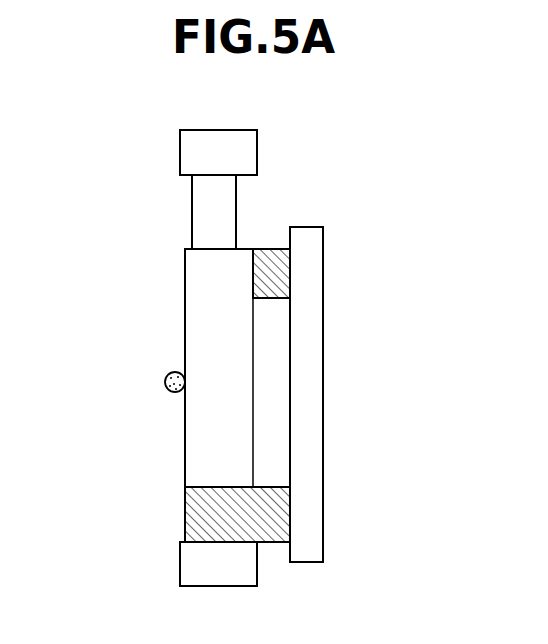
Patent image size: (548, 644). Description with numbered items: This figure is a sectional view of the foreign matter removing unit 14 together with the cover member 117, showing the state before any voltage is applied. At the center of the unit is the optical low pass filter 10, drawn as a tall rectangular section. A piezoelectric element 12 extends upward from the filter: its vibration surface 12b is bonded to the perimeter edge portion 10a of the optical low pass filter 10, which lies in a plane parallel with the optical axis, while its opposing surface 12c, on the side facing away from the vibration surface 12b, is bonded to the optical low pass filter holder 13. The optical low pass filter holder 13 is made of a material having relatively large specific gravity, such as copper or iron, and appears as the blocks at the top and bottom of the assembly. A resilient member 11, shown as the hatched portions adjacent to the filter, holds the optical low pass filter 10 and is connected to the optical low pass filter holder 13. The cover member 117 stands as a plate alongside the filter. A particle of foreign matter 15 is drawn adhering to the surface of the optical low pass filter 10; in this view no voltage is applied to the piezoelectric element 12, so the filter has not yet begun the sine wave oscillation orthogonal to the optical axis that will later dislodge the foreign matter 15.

The foreign matter removing unit 14 is at (142, 150).
The optical low pass filter holder 13 is at (257, 142).
The piezoelectric element 12 is at (197, 195).
The opposing surface 12c is at (217, 175).
The vibration surface 12b is at (217, 249).
The optical low pass filter 10 is at (202, 327).
The perimeter edge portion 10a is at (203, 253).
The resilient member 11 is at (292, 290).
The cover member 117 is at (307, 254).
The foreign matter 15 is at (165, 382).